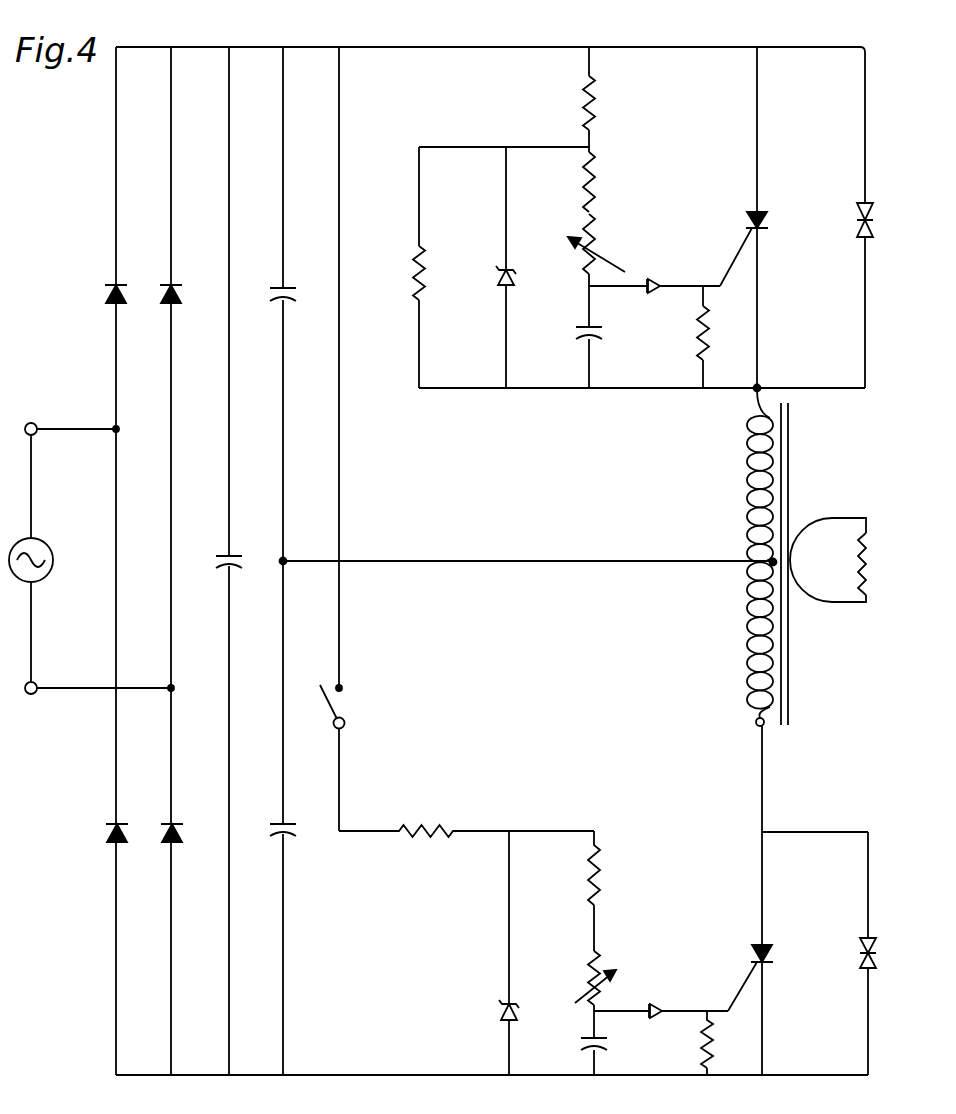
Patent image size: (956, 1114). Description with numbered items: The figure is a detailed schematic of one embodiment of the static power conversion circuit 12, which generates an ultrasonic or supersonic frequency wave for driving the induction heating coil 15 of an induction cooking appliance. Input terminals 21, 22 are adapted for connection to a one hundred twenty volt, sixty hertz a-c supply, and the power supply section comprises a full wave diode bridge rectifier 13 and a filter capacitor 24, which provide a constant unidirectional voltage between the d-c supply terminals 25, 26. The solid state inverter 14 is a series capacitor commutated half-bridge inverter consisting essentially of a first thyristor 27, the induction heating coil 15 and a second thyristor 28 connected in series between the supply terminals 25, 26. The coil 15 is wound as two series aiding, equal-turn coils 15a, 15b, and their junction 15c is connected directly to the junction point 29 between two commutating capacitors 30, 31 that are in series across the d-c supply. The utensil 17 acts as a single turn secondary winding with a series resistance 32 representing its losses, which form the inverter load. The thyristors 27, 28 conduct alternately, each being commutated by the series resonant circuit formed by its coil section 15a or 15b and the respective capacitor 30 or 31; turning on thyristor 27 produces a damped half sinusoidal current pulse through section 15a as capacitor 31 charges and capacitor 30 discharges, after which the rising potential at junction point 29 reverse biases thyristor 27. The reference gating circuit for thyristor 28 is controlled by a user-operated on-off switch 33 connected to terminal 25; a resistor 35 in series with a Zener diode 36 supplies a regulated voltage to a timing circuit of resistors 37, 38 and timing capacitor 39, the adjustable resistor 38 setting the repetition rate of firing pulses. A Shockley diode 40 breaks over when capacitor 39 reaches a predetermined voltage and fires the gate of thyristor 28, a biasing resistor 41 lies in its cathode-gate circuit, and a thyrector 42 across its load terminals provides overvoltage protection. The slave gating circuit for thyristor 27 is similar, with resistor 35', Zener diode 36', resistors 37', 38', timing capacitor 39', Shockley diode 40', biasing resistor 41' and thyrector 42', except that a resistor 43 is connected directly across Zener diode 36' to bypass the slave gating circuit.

The static power conversion circuit 12 is at (100, 196).
The full wave diode bridge rectifier 13 is at (162, 595).
The solid state inverter 14 is at (558, 533).
The induction heating coil 15 is at (805, 466).
The first coil section 15a is at (747, 468).
The second coil section 15b is at (758, 635).
The junction of the two coils 15c is at (776, 566).
The utensil 17 is at (818, 520).
The power converter input terminal 21 is at (38, 427).
The power converter input terminal 22 is at (37, 694).
The filter capacitor 24 is at (229, 556).
The positive d-c supply terminal 25 is at (236, 47).
The negative d-c supply terminal 26 is at (256, 1074).
The first thyristor 27 is at (765, 225).
The second thyristor 28 is at (768, 945).
The junction point 29 is at (285, 558).
The commutating capacitor 30 is at (286, 290).
The commutating capacitor 31 is at (290, 827).
The series resistance 32 is at (868, 545).
The on-off switch 33 is at (322, 684).
The resistor 35 is at (466, 851).
The Zener diode 36 is at (489, 953).
The resistor 37 is at (572, 891).
The adjustable resistor 38 is at (580, 994).
The timing capacitor 39 is at (571, 1053).
The Shockley diode 40 is at (661, 994).
The biasing resistor 41 is at (686, 1043).
The thyrector 42 is at (854, 953).
The resistor 35' is at (569, 99).
The Zener diode 36' is at (490, 267).
The resistor 37' is at (621, 182).
The adjustable resistor 38' is at (580, 270).
The timing capacitor 39' is at (572, 357).
The Shockley diode 40' is at (654, 268).
The biasing resistor 41' is at (726, 337).
The thyrector 42' is at (841, 295).
The resistor 43 is at (416, 270).